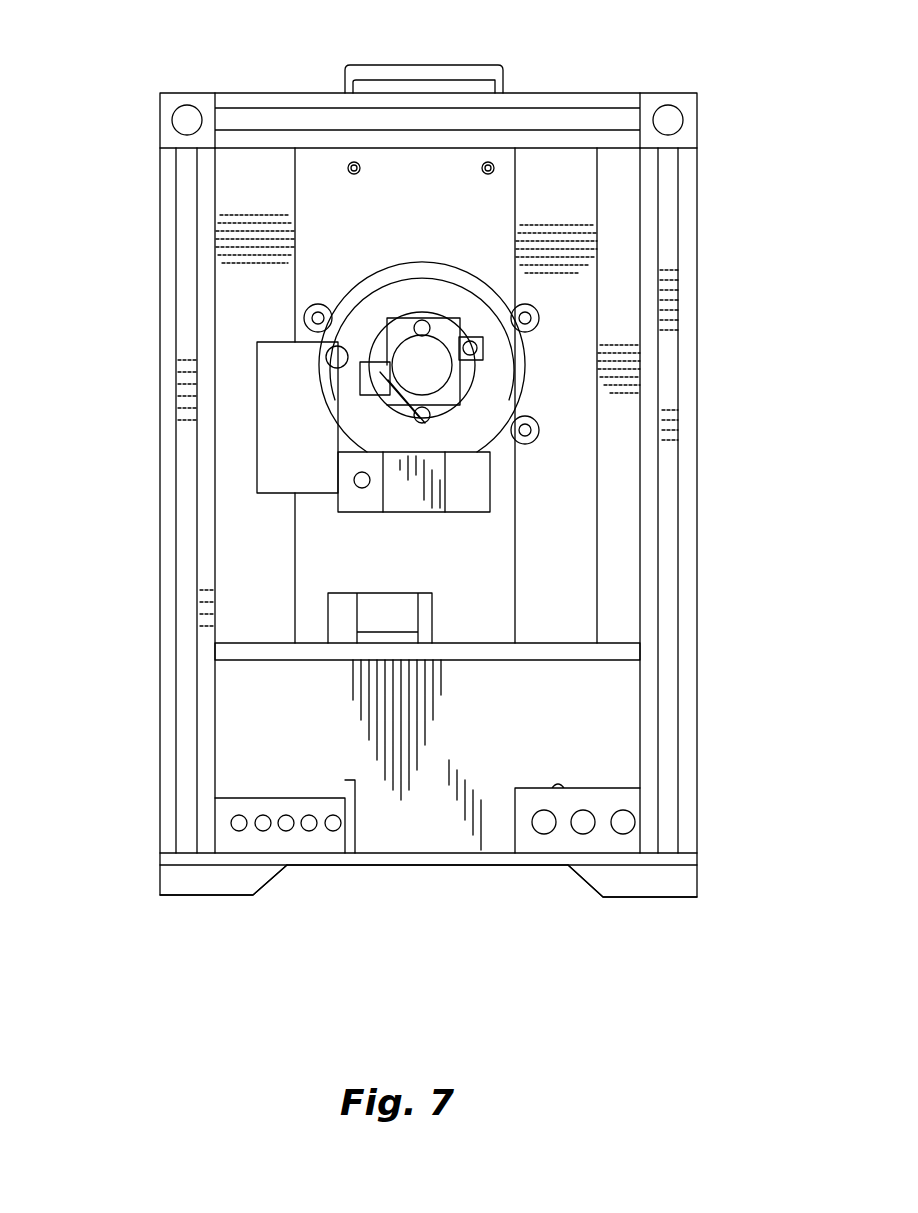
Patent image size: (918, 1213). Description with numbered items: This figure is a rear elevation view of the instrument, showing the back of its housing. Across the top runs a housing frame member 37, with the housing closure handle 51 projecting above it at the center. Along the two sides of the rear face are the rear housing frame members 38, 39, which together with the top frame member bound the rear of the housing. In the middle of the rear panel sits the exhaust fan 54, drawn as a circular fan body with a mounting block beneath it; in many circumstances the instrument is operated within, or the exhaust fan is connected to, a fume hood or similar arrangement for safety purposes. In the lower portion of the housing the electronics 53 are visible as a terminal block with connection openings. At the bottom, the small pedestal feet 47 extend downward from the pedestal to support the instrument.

The housing frame member 37 is at (620, 58).
The rear housing frame member 38 is at (170, 375).
The rear housing frame member 39 is at (690, 408).
The pedestal feet 47 is at (190, 882).
The housing closure handle 51 is at (368, 72).
The electronics 53 is at (570, 750).
The exhaust fan 54 is at (400, 305).